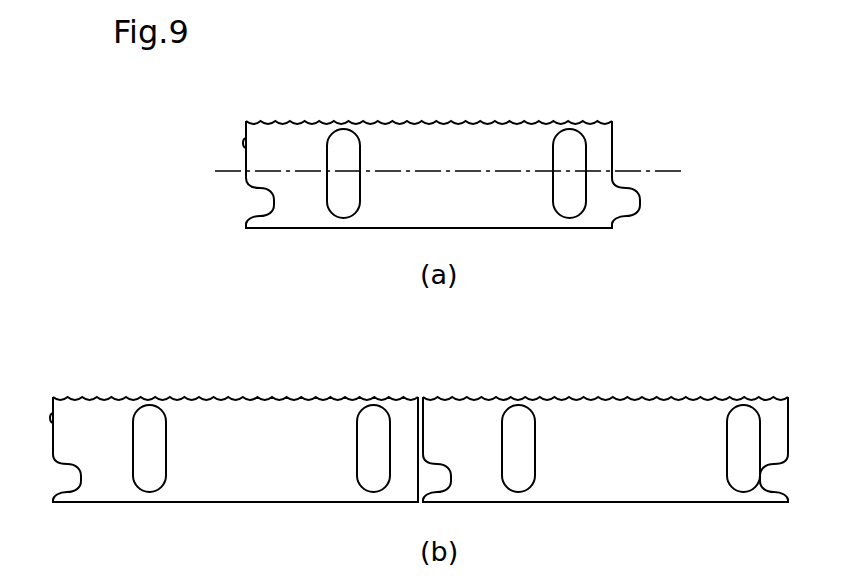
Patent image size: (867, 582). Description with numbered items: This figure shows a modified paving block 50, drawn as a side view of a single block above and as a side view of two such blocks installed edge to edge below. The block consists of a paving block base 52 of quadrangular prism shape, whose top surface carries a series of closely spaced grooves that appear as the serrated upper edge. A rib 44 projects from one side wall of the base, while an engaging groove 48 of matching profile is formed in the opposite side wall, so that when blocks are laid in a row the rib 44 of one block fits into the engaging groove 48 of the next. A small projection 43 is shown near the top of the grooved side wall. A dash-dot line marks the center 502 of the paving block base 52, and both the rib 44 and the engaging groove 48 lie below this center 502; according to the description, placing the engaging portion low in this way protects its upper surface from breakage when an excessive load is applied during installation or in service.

The paving block 50 is at (627, 115).
The paving block base 52 is at (447, 130).
The positioning projection 43 is at (245, 143).
The engaging groove 48 is at (256, 201).
The rib 44 is at (642, 200).
The center 502 is at (660, 171).